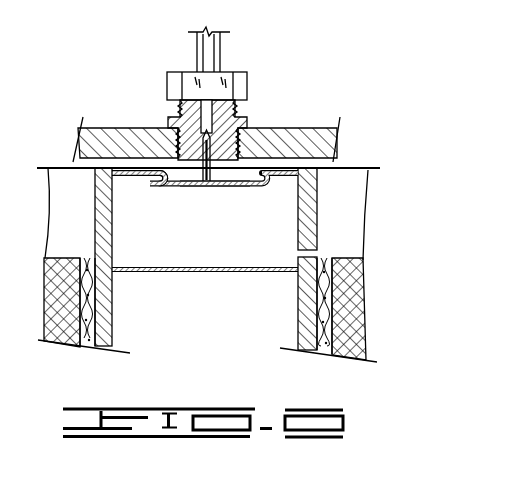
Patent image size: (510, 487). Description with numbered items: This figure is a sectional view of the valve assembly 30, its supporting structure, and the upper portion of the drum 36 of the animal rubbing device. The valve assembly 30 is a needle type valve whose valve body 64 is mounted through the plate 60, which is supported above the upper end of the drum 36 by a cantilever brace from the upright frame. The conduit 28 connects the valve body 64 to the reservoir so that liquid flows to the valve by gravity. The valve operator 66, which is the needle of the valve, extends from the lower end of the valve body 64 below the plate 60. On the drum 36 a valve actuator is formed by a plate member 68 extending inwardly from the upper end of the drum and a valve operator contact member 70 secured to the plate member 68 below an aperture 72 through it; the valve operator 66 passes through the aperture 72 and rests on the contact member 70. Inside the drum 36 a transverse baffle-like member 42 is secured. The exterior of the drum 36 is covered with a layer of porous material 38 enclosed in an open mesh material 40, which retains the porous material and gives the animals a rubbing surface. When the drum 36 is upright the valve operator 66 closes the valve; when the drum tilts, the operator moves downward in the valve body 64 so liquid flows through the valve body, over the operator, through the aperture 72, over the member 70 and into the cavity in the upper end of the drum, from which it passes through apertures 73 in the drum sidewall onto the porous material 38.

The conduit 28 is at (210, 65).
The valve assembly 30 is at (170, 62).
The drum 36 is at (105, 338).
The porous material 38 is at (330, 353).
The mesh covering material 40 is at (348, 358).
The baffle-like member 42 is at (135, 272).
The plate 60 is at (335, 138).
The valve body 64 is at (242, 118).
The valve operator 66 is at (215, 178).
The plate member 68 is at (283, 178).
The valve operator contact member 70 is at (237, 182).
The aperture 72 is at (172, 183).
The apertures 73 is at (316, 253).